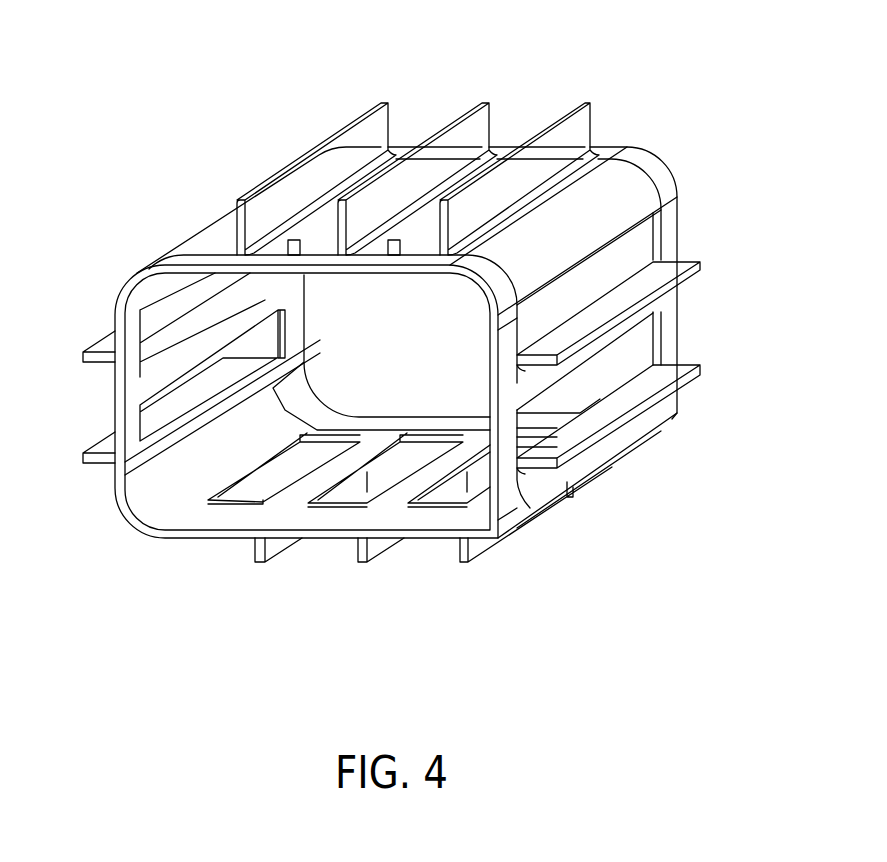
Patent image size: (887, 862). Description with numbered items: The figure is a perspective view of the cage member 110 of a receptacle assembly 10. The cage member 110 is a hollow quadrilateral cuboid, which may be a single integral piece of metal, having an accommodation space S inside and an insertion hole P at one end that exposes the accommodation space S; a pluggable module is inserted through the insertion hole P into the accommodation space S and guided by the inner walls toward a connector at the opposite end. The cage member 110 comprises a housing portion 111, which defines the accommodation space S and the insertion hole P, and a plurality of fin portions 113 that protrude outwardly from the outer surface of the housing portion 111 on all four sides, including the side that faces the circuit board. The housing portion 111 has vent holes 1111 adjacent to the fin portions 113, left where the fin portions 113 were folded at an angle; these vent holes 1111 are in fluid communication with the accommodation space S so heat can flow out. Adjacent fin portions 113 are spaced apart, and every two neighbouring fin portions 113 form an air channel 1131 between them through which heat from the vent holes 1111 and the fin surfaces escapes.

The receptacle assembly 10 is at (300, 77).
The cage member 110 is at (640, 130).
The housing portion 111 is at (668, 238).
The fin portion 113 is at (567, 118).
The vent hole 1111 is at (424, 237).
The air channel 1131 is at (400, 270).
The insertion hole P is at (150, 492).
The accommodation space S is at (453, 383).